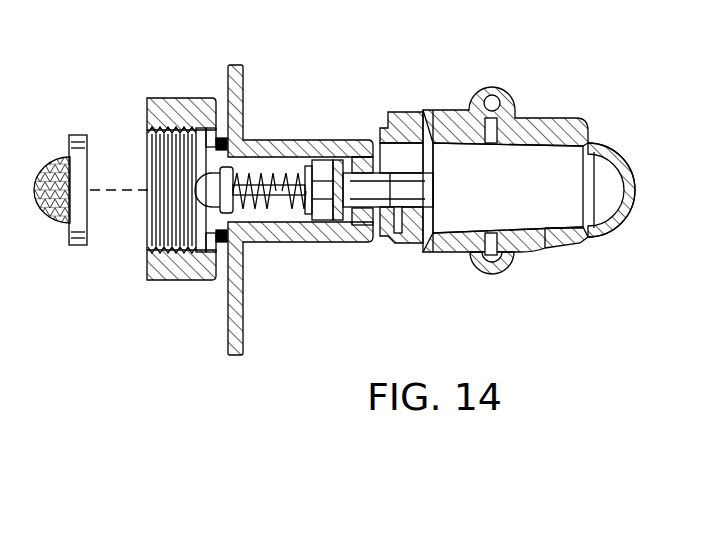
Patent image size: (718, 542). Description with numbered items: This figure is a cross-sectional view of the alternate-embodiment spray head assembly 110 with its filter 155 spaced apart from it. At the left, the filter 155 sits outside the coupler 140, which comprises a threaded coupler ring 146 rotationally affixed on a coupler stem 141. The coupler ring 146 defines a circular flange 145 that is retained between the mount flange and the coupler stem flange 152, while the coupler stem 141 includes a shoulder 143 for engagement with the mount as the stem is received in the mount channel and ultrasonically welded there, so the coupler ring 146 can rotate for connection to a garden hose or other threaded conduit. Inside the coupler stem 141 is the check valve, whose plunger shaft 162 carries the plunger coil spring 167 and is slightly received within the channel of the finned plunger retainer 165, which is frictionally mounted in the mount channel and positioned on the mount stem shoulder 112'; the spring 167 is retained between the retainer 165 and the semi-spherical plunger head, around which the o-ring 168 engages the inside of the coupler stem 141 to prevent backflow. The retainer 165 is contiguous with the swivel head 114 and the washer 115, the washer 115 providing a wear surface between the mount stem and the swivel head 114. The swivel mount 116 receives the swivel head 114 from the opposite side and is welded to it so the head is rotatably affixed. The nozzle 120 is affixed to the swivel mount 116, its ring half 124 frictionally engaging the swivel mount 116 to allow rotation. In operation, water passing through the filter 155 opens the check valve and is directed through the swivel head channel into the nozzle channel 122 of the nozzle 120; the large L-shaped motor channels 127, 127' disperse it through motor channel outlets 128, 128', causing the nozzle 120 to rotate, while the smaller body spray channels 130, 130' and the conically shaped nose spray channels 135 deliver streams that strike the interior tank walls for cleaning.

The spray head assembly 110 is at (636, 312).
The mount stem shoulder 112' is at (352, 142).
The swivel head 114 is at (372, 207).
The washer 115 is at (358, 146).
The swivel mount 116 is at (398, 233).
The nozzle 120 is at (540, 105).
The nozzle channel 122 is at (516, 176).
The ring half 124 is at (397, 137).
The motor channel 127 is at (475, 231).
The motor channel 127' is at (470, 148).
The motor channel outlet 128 is at (474, 68).
The motor channel outlet 128' is at (478, 303).
The body spray channel 130 is at (588, 182).
The body spray channel 130' is at (557, 221).
The nose spray channels 135 is at (633, 141).
The coupler 140 is at (147, 91).
The coupler stem 141 is at (213, 163).
The shoulder 143 is at (209, 222).
The circular flange 145 is at (226, 128).
The threaded coupler ring 146 is at (173, 265).
The coupler stem flange 152 is at (216, 130).
The filter 155 is at (41, 147).
The plunger shaft 162 is at (266, 162).
The finned plunger retainer 165 is at (322, 213).
The plunger coil spring 167 is at (298, 163).
The o-ring 168 is at (222, 195).